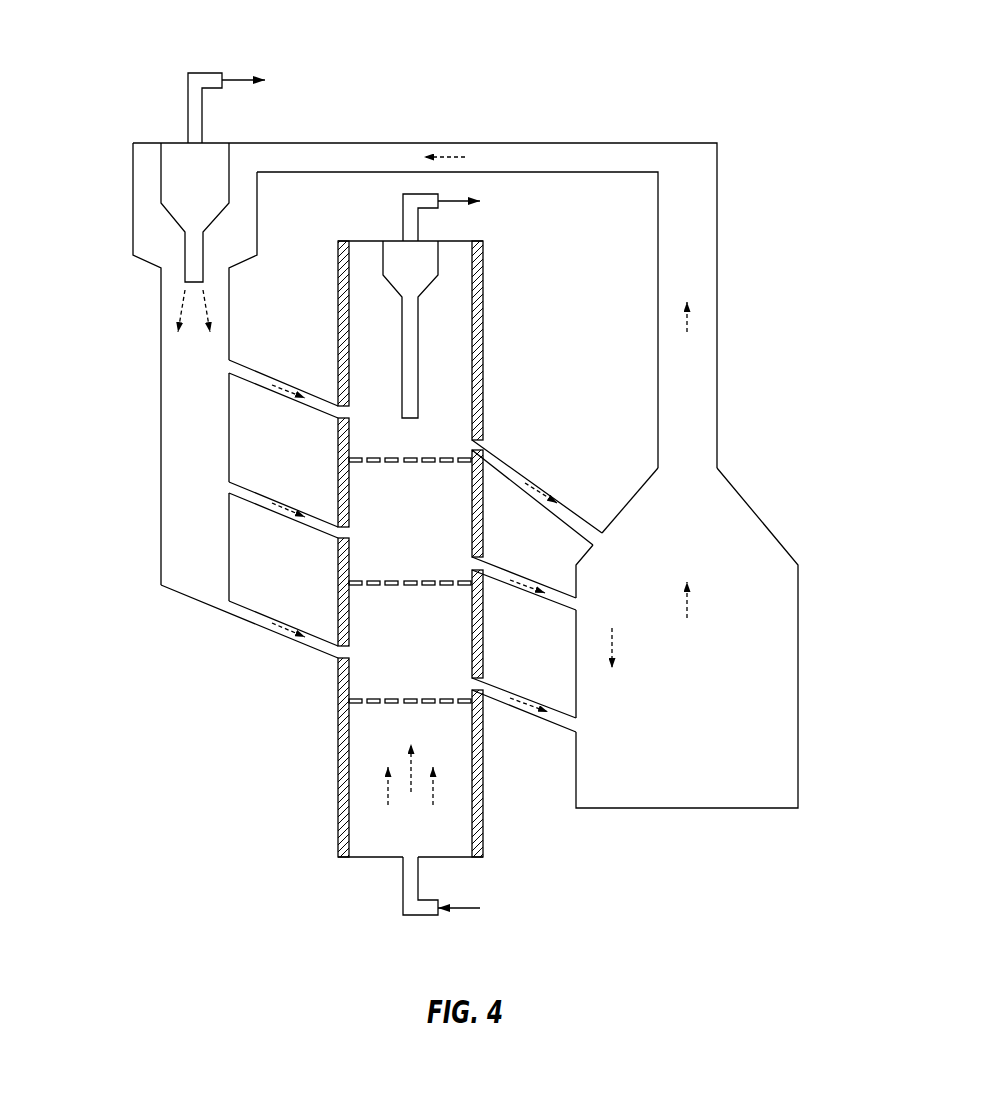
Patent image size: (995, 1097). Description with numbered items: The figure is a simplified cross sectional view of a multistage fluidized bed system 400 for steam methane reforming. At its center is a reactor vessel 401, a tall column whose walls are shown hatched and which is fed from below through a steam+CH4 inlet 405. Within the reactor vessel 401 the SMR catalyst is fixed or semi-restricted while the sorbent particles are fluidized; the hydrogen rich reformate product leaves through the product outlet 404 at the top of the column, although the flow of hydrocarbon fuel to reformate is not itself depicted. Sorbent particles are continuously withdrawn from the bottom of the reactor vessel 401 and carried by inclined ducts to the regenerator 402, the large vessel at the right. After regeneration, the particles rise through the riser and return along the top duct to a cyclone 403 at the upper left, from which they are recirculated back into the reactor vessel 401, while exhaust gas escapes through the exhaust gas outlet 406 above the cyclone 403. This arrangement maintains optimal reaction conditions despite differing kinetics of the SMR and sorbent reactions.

The fluidized bed system 400 is at (473, 487).
The reactor vessel 401 is at (338, 770).
The regenerator 402 is at (680, 809).
The cyclone 403 is at (160, 185).
The product outlet 404 is at (402, 228).
The steam+CH4 inlet 405 is at (470, 909).
The exhaust gas outlet 406 is at (237, 76).